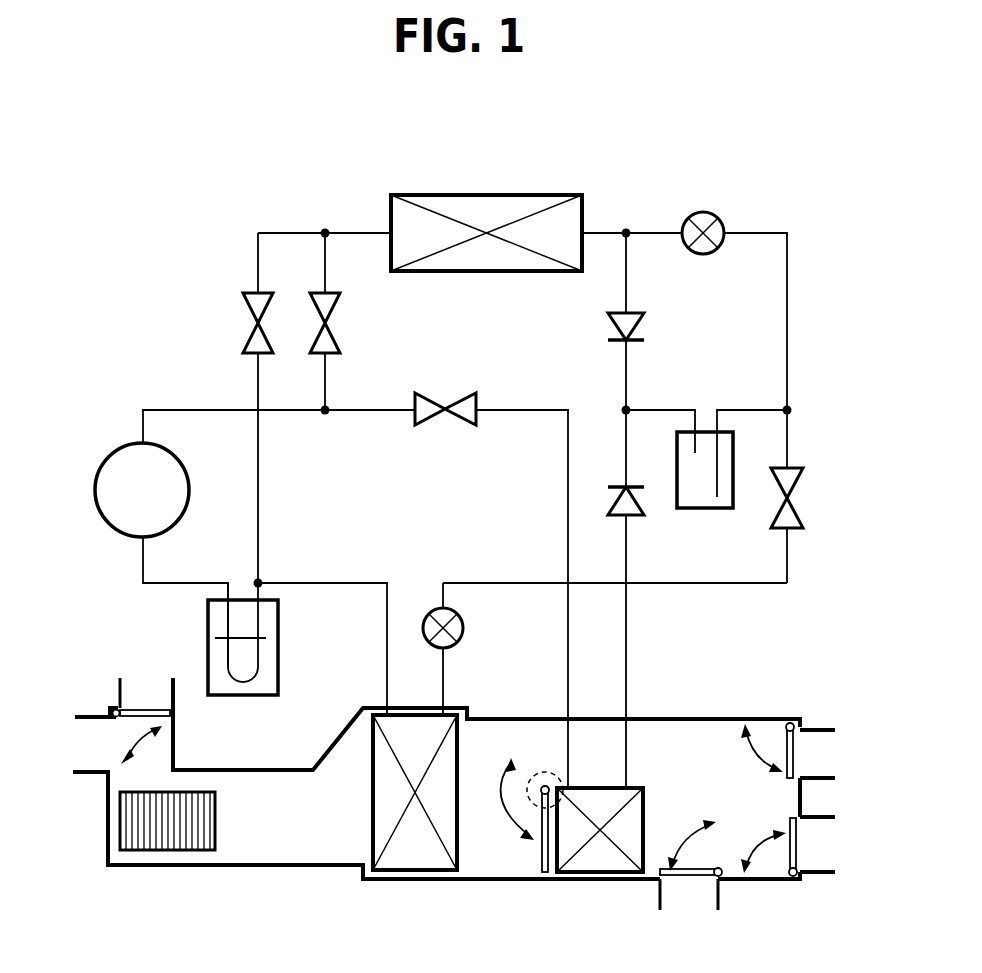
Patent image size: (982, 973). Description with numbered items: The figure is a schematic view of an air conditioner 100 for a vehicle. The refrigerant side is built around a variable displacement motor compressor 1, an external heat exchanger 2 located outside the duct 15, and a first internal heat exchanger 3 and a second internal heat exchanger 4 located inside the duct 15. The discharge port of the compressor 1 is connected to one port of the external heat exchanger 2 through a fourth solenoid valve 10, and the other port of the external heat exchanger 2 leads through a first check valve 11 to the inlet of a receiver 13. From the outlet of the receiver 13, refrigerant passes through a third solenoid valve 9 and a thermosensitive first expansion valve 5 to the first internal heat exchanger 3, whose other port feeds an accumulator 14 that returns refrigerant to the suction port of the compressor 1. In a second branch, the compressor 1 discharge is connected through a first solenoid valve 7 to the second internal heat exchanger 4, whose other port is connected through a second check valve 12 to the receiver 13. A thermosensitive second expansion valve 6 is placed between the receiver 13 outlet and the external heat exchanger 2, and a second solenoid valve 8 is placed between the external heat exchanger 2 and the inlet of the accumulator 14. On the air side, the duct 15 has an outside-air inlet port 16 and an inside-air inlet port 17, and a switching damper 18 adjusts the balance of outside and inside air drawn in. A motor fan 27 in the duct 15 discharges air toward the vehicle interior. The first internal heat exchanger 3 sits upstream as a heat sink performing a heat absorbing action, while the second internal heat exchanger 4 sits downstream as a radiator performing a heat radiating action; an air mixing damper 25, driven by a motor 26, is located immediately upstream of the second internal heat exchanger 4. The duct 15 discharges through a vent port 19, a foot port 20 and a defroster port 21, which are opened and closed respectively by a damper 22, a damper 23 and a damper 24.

The air conditioner 100 is at (638, 194).
The variable displacement motor compressor 1 is at (114, 445).
The external heat exchanger 2 is at (555, 195).
The first internal heat exchanger 3 is at (412, 879).
The second internal heat exchanger 4 is at (600, 879).
The first expansion valve 5 is at (464, 627).
The second expansion valve 6 is at (722, 222).
The first solenoid valve 7 is at (448, 402).
The second solenoid valve 8 is at (247, 326).
The third solenoid valve 9 is at (795, 498).
The fourth solenoid valve 10 is at (333, 328).
The first check valve 11 is at (608, 329).
The second check valve 12 is at (638, 498).
The receiver 13 is at (735, 459).
The accumulator 14 is at (281, 640).
The duct 15 is at (285, 866).
The outside-air inlet port 16 is at (131, 687).
The inside-air inlet port 17 is at (84, 753).
The switching damper 18 is at (156, 712).
The vent port 19 is at (820, 744).
The foot port 20 is at (820, 851).
The defroster port 21 is at (698, 898).
The damper 22 is at (797, 762).
The damper 23 is at (800, 834).
The damper 24 is at (678, 878).
The air mixing damper 25 is at (542, 862).
The motor for the air mixing damper 26 is at (540, 772).
The motor fan 27 is at (192, 829).